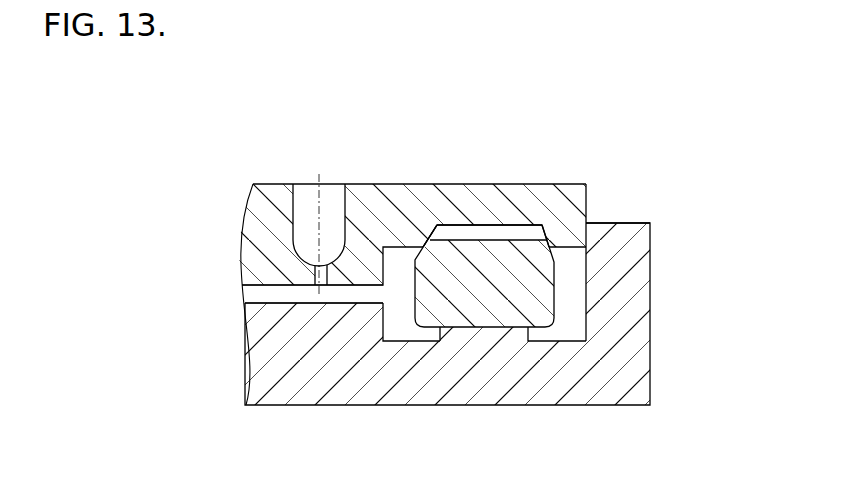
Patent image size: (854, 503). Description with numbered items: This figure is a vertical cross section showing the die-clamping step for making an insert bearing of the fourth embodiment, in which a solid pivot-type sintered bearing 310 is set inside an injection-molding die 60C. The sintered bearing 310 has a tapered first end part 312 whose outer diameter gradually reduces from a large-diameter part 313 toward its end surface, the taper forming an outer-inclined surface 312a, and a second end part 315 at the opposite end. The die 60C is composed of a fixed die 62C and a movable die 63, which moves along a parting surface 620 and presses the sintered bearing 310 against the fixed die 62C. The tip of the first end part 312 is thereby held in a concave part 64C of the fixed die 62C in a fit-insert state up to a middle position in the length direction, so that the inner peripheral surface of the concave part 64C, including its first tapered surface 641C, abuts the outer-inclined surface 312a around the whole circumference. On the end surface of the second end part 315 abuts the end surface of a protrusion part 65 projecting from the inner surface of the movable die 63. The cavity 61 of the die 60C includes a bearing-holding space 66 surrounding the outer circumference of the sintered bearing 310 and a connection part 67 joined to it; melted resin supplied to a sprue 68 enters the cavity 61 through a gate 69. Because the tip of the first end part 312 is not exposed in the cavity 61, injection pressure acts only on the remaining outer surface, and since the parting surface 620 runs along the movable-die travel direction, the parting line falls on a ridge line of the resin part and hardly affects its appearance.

The injection-molding die 60C is at (595, 188).
The cavity 61 is at (405, 243).
The fixed die 62C is at (434, 186).
The movable die 63 is at (625, 378).
The concave part 64C is at (480, 222).
The first tapered surface 641C is at (443, 242).
The protrusion part 65 is at (399, 346).
The bearing-holding space 66 is at (574, 307).
The connection part 67 is at (262, 296).
The sprue 68 is at (343, 207).
The gate 69 is at (300, 276).
The sintered bearing 310 is at (569, 286).
The first end part 312 is at (522, 235).
The outer-inclined surface 312a is at (554, 226).
The large-diameter part 313 is at (552, 318).
The second end part 315 is at (528, 341).
The parting surface 620 is at (590, 238).